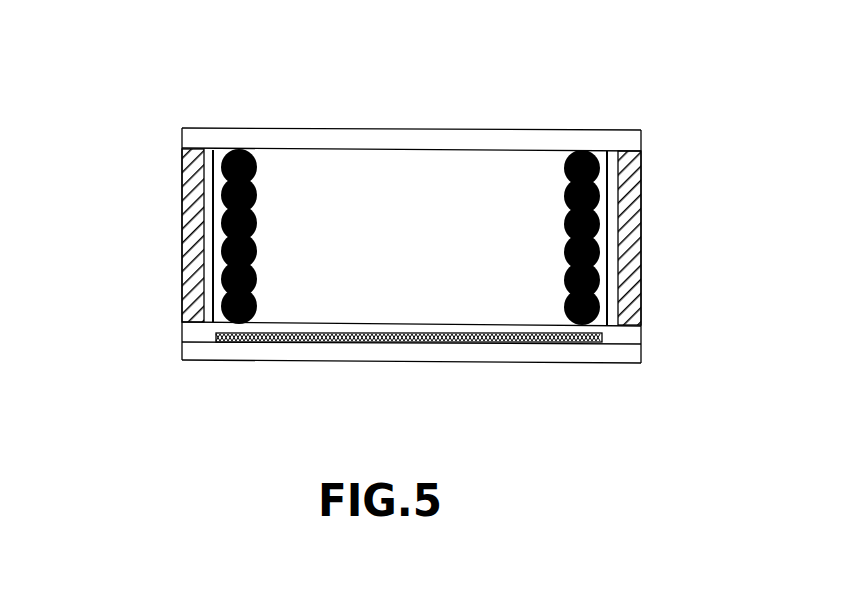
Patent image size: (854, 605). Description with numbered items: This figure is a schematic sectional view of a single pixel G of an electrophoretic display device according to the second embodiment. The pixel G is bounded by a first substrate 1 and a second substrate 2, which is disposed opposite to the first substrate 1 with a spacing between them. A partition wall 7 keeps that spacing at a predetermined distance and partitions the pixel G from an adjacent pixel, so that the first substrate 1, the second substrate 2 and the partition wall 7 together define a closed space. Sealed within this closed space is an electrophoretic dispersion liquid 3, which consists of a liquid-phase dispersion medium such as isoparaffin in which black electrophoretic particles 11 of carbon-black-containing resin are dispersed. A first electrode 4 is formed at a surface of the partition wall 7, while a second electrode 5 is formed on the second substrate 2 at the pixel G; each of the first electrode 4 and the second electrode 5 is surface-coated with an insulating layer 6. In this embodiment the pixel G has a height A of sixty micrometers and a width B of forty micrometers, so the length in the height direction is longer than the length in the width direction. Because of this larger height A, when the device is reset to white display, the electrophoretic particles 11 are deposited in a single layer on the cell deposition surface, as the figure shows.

The upper substrate 1 is at (593, 147).
The lower substrate 2 is at (602, 358).
The cavity / inner space 3 is at (362, 168).
The side wall 4 is at (645, 188).
The strip / electrode layer 5 is at (447, 343).
The sealing layer 6 is at (623, 335).
The assembly / package 7 is at (668, 170).
The spacer beads 11 is at (220, 163).
The gap indication G is at (352, 116).
The dimension A (height) A is at (182, 147).
The dimension B (width) B is at (604, 130).